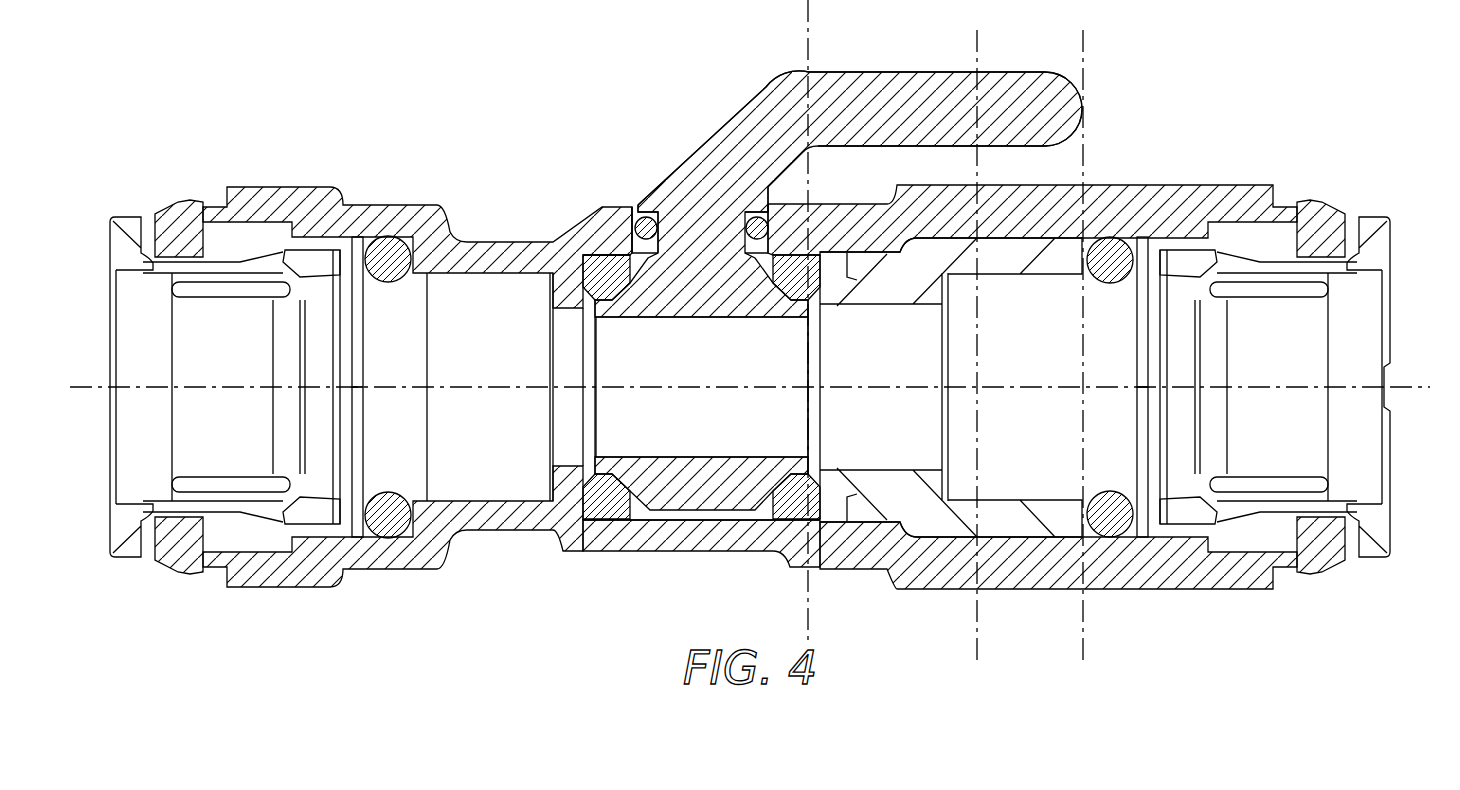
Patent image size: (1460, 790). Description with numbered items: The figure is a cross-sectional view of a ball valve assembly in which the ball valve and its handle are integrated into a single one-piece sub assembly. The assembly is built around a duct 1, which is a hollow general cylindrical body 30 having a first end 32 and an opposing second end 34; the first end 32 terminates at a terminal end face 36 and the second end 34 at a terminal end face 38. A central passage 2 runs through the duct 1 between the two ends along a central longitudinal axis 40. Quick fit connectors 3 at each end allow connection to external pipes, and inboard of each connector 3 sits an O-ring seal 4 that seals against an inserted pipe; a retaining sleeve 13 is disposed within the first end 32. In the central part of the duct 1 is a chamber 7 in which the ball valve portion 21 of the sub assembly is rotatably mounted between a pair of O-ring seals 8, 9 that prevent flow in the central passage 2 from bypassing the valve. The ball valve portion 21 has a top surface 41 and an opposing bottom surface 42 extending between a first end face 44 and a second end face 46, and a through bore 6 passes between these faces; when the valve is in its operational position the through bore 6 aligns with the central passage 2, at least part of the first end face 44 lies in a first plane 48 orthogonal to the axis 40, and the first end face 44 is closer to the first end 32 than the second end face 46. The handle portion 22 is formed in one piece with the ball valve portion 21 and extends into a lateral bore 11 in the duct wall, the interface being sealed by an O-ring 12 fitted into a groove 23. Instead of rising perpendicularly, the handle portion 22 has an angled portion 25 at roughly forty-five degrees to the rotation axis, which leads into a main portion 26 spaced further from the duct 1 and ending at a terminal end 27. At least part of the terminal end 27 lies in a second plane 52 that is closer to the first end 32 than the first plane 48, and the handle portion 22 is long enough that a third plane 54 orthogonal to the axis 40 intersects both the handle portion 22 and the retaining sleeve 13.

The duct 1 is at (408, 566).
The central passage 2 is at (494, 416).
The quick fit connectors 3 is at (178, 572).
The O-ring seal 4 is at (388, 238).
The through bore 6 is at (708, 373).
The chamber 7 is at (700, 520).
The O-ring seal 8 is at (606, 513).
The O-ring seal 9 is at (787, 518).
The lateral bore 11 is at (640, 218).
The O-ring 12 is at (765, 225).
The retaining sleeve 13 is at (1010, 522).
The ball valve portion 21 is at (700, 452).
The handle portion 22 is at (786, 92).
The groove 23 is at (662, 212).
The angled portion 25 is at (722, 133).
The main portion 26 is at (948, 82).
The terminal end 27 is at (1083, 118).
The hollow general cylindrical body 30 is at (1153, 187).
The first end 32 is at (1244, 127).
The second end 34 is at (272, 146).
The terminal end face 36 is at (1297, 197).
The terminal end face 38 is at (203, 193).
The central longitudinal axis 40 is at (1410, 387).
The top surface 41 is at (638, 265).
The bottom surface 42 is at (667, 510).
The first end face 44 is at (810, 440).
The second end face 46 is at (583, 425).
The first plane 48 is at (810, 614).
The second plane 52 is at (1084, 648).
The third plane 54 is at (978, 648).